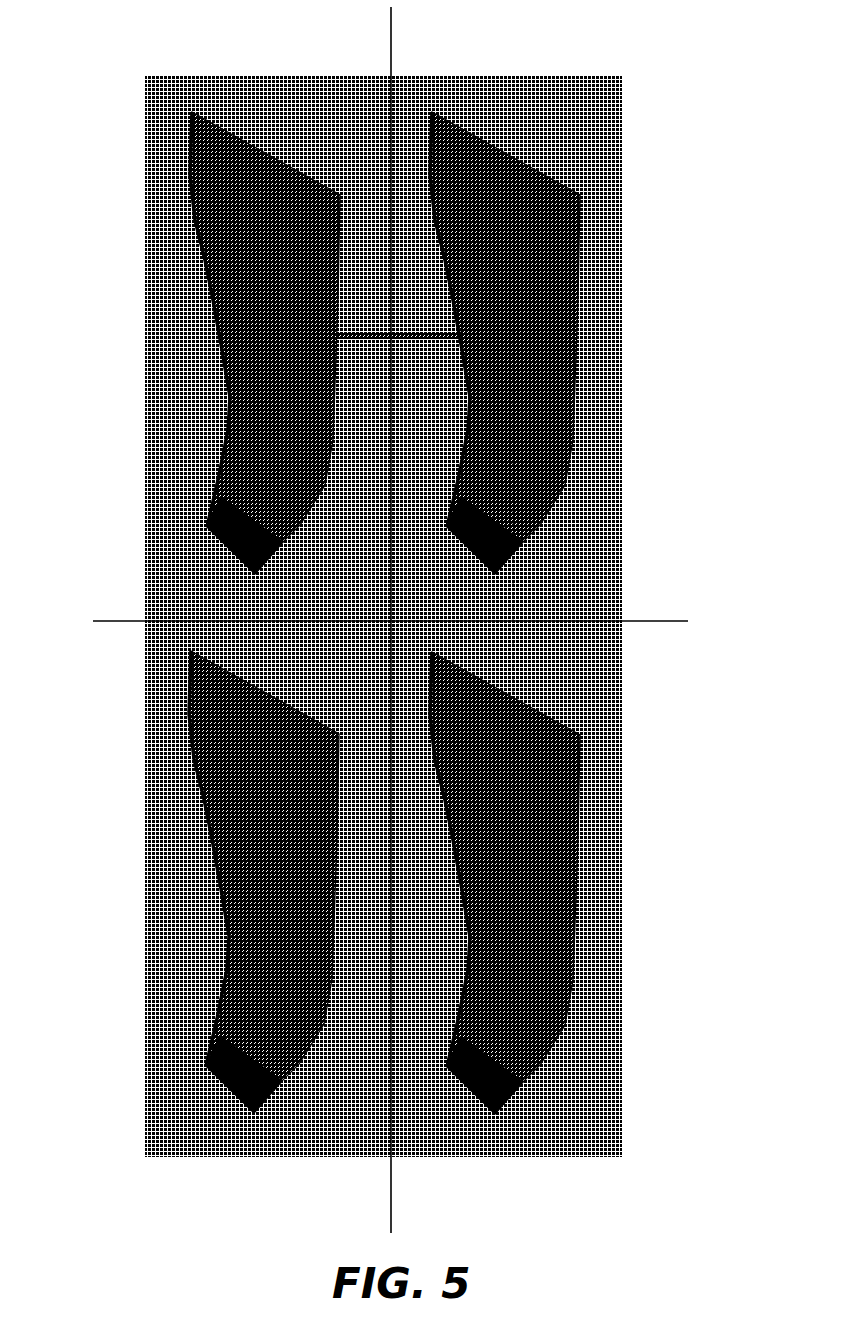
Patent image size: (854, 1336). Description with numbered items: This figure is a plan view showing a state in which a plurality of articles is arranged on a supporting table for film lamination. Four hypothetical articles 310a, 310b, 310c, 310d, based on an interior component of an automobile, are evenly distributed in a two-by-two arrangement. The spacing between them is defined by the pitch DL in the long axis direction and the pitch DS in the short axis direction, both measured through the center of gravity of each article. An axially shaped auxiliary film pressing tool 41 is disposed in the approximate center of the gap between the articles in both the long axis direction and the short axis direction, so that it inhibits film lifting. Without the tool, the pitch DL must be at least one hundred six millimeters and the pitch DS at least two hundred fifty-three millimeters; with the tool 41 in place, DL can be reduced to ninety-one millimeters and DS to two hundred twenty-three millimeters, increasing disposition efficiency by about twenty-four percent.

The article 310a is at (260, 170).
The article 310b is at (512, 165).
The article 310c is at (248, 980).
The article 310d is at (535, 1007).
The auxiliary film pressing tool 41 is at (657, 621).
The inter-article pitch in the short axis direction DS is at (400, 335).
The inter-article pitch in the long axis direction DL is at (518, 542).